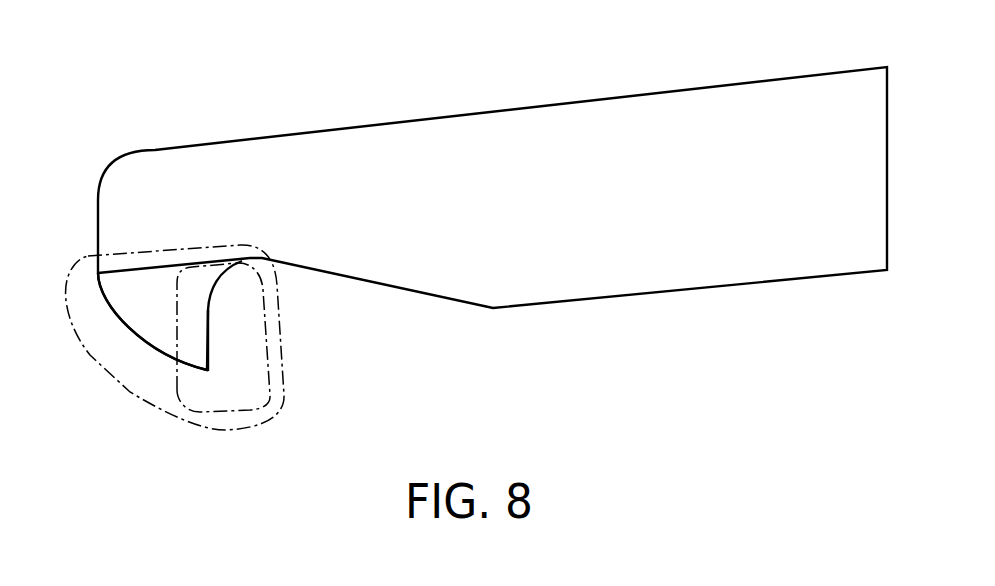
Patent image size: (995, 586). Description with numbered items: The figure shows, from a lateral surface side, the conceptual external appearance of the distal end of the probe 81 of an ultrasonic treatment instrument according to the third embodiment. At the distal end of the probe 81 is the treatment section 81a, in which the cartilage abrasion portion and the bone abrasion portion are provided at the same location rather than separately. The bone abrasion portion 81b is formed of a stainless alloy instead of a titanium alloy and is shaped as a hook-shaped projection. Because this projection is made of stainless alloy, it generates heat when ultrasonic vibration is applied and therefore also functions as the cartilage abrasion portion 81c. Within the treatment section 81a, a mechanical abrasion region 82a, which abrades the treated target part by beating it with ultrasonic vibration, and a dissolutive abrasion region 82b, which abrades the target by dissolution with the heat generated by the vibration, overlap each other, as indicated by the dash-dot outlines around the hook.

The probe 81 is at (826, 72).
The treatment section 81a is at (70, 357).
The bone abrasion portion 81b is at (208, 343).
The cartilage abrasion portion 81c is at (164, 353).
The mechanical abrasion region 82a is at (264, 297).
The dissolutive abrasion region 82b is at (262, 425).